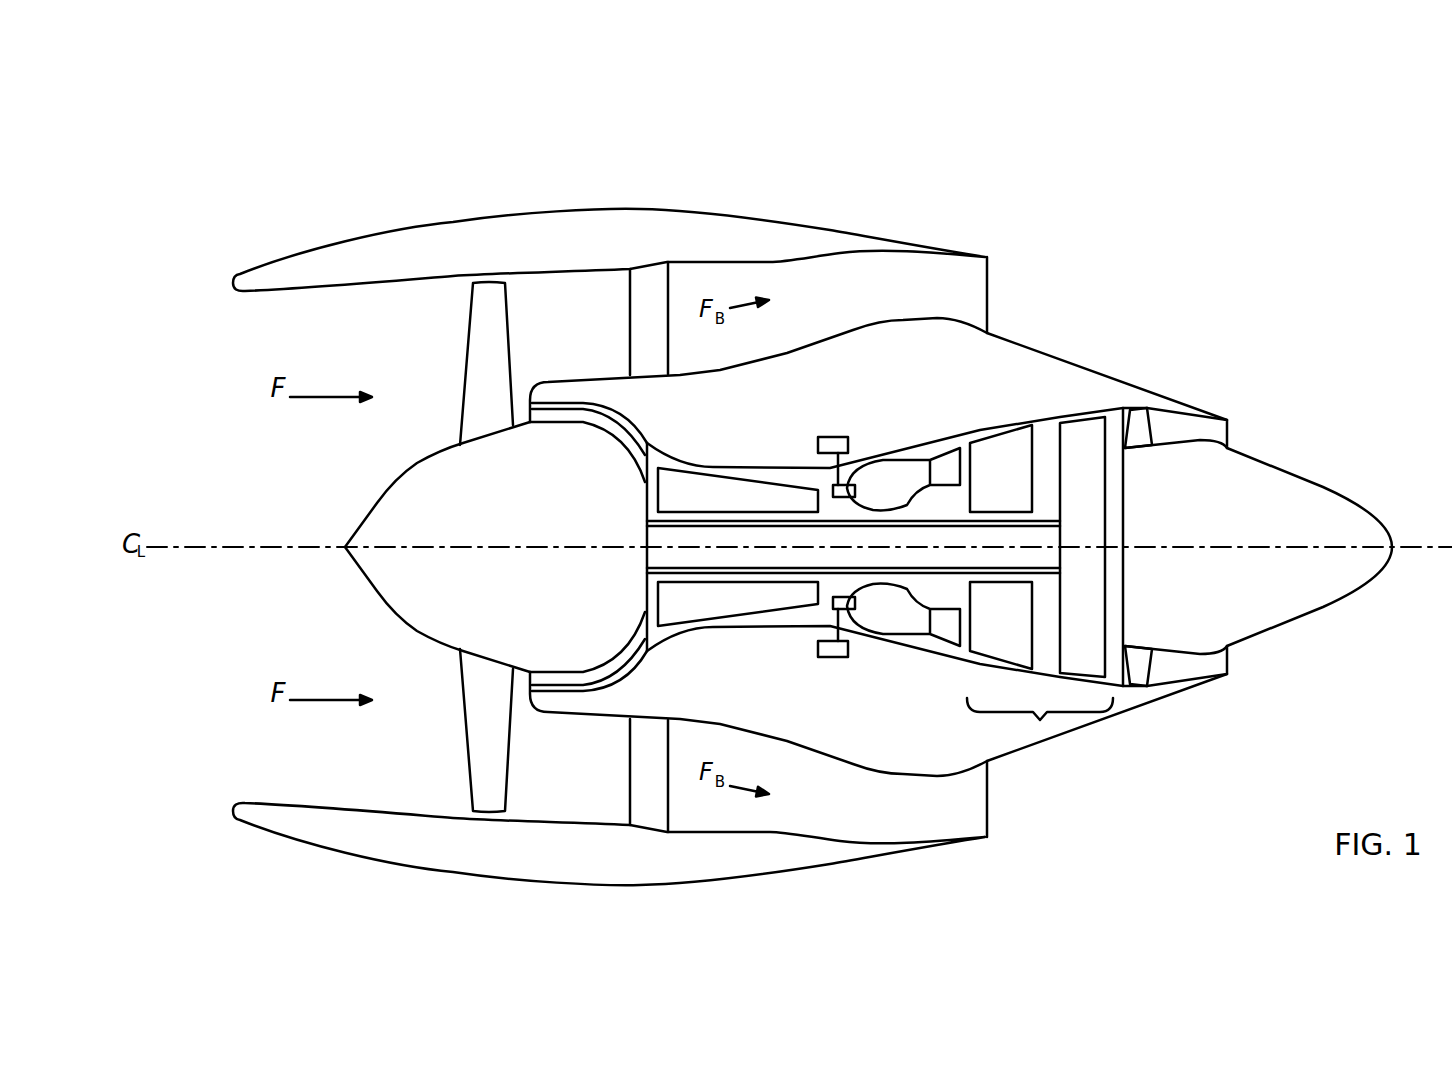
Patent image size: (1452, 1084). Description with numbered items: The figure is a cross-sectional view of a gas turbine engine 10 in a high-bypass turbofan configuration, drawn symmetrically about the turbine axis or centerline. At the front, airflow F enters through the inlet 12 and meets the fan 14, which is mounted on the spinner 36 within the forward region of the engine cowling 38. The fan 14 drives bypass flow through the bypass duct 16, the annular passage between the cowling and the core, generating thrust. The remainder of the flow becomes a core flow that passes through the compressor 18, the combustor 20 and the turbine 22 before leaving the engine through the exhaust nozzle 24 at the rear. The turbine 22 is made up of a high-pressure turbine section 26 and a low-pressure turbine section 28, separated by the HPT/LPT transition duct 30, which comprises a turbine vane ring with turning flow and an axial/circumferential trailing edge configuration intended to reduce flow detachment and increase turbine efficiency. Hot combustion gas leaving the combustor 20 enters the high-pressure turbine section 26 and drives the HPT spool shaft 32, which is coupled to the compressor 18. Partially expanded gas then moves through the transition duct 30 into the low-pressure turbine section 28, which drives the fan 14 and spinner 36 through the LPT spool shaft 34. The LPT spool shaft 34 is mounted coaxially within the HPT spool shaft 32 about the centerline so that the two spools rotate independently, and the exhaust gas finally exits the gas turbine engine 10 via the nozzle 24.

The gas turbine engine 10 is at (1209, 169).
The inlet 12 is at (211, 445).
The fan 14 is at (482, 368).
The bypass duct 16 is at (823, 307).
The compressor 18 is at (710, 490).
The combustor 20 is at (890, 483).
The turbine 22 is at (1040, 720).
The exhaust nozzle 24 is at (1250, 429).
The high-pressure turbine section 26 is at (988, 457).
The low-pressure turbine section 28 is at (1083, 443).
The HPT/LPT transition duct 30 is at (1044, 421).
The HPT spool shaft 32 is at (827, 588).
The LPT spool shaft 34 is at (688, 560).
The spinner 36 is at (377, 517).
The engine cowling 38 is at (352, 253).